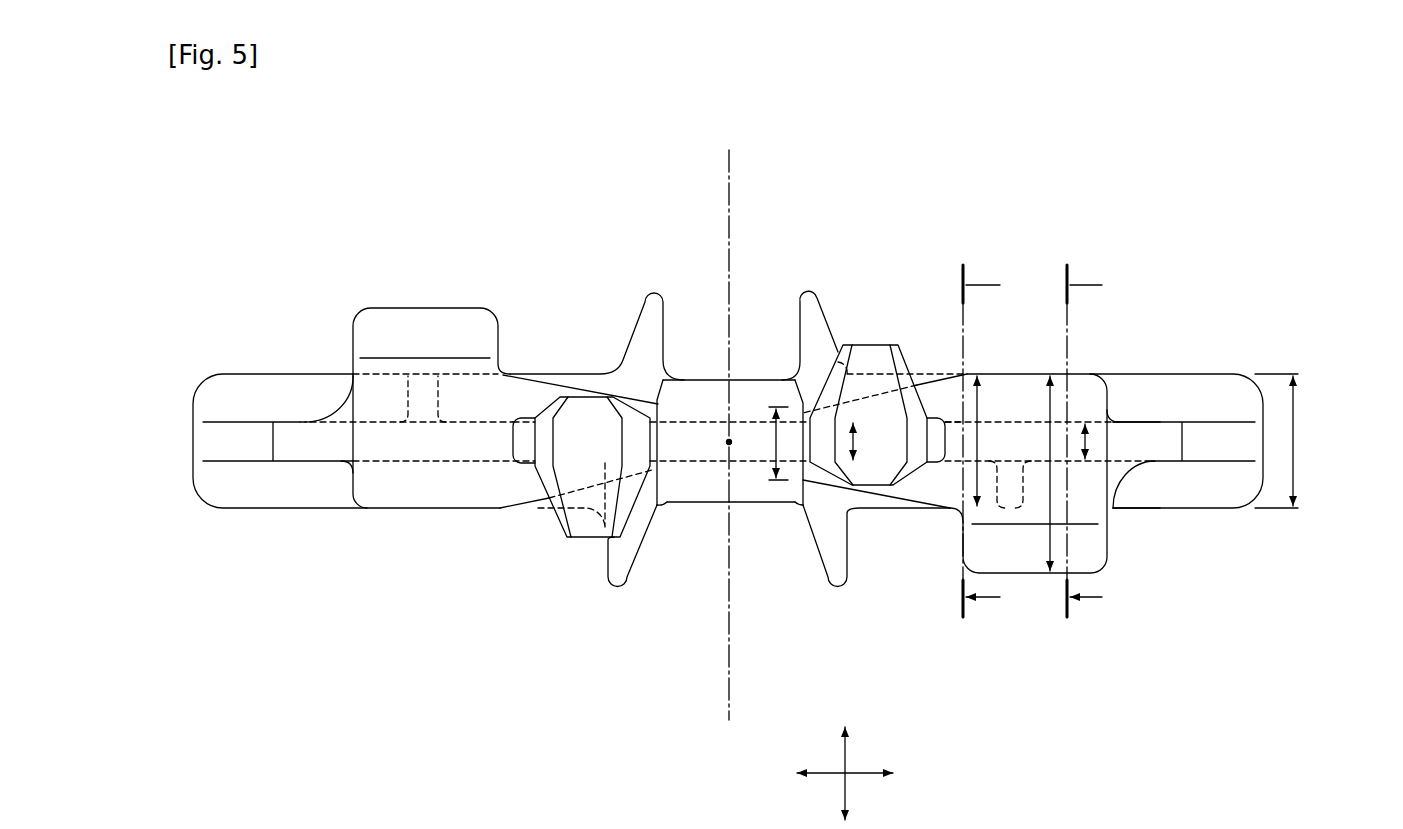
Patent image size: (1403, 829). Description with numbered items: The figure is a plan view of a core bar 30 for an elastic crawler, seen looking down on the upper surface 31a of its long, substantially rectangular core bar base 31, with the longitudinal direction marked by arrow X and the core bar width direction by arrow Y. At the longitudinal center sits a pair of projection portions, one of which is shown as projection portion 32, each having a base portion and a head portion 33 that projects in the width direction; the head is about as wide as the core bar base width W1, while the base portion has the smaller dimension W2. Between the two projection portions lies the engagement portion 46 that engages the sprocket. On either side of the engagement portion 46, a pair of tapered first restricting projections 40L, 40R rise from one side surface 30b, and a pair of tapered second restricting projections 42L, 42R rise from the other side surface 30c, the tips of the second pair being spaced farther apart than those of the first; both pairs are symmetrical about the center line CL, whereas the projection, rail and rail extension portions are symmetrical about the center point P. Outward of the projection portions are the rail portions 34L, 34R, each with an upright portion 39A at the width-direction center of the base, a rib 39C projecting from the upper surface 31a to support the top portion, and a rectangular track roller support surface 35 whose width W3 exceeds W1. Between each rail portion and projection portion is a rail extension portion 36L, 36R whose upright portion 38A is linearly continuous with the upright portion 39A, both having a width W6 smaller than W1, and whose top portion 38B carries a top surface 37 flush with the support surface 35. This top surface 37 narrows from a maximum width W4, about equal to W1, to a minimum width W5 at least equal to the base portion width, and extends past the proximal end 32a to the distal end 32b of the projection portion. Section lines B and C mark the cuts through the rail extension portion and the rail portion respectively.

The core bar 30 is at (1018, 226).
The core bar base 31 is at (266, 385).
The upper surface 31a is at (1207, 385).
The one side surface 30b is at (1152, 372).
The another side surface 30c is at (1153, 510).
The projection portion 32 is at (587, 538).
The proximal end of the projection portion 32a is at (555, 417).
The distal end of the projection portion 32b is at (658, 443).
The projection portion head and base 33 is at (871, 343).
The rail portion 34L is at (420, 307).
The rail portion 34R is at (1100, 572).
The track roller support surface 35 is at (467, 328).
The rail extension portion 36L is at (567, 388).
The rail extension portion 36R is at (900, 500).
The top surface 37 is at (507, 437).
The upright portion 38A is at (508, 465).
The top portion 38B is at (527, 487).
The upright portion 39A is at (463, 465).
The rib 39C is at (420, 390).
The first restricting projection 40L is at (648, 290).
The first restricting projection 40R is at (812, 290).
The second restricting projection 42L is at (620, 585).
The second restricting projection 42R is at (840, 585).
The engagement portion 46 is at (703, 480).
The center point P is at (729, 442).
The center line CL is at (735, 157).
The width dimension of the core bar base W1 is at (1296, 441).
The dimension of the base portion W2 is at (856, 443).
The dimension of the track roller support surface W3 is at (1048, 400).
The maximum dimension of the top surface W4 is at (979, 443).
The minimum dimension of the top surface W5 is at (777, 485).
The dimension of the upright portions W6 is at (1090, 444).
The line B- B is at (993, 441).
The line C- C is at (1095, 441).
The arrow X direction X is at (848, 788).
The arrow Y direction Y is at (848, 764).